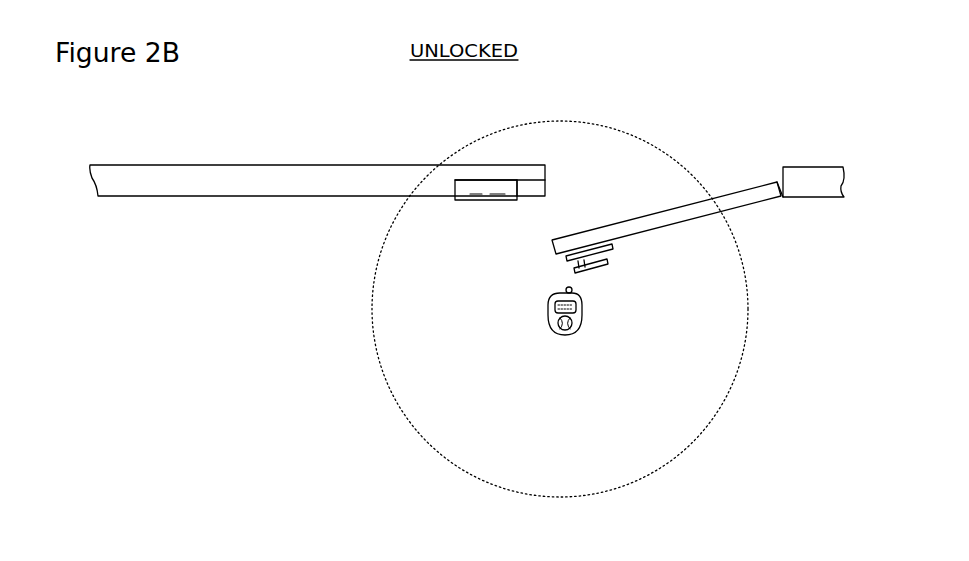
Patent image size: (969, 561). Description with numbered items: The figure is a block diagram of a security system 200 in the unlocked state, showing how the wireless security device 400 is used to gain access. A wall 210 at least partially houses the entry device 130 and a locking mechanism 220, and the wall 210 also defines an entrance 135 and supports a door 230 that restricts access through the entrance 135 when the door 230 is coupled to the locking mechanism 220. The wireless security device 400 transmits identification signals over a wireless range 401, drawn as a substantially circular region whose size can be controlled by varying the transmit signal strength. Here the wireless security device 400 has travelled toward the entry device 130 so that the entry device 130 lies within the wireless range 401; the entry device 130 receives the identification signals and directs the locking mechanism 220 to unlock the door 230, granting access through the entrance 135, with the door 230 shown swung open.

The secure entry system 200 is at (811, 99).
The wall 210 is at (300, 165).
The locking mechanism 220 is at (527, 180).
The entry device 130 is at (502, 202).
The entrance 135 is at (599, 188).
The door 230 is at (729, 193).
The wireless security device 400 is at (597, 360).
The wireless range 401 is at (406, 418).